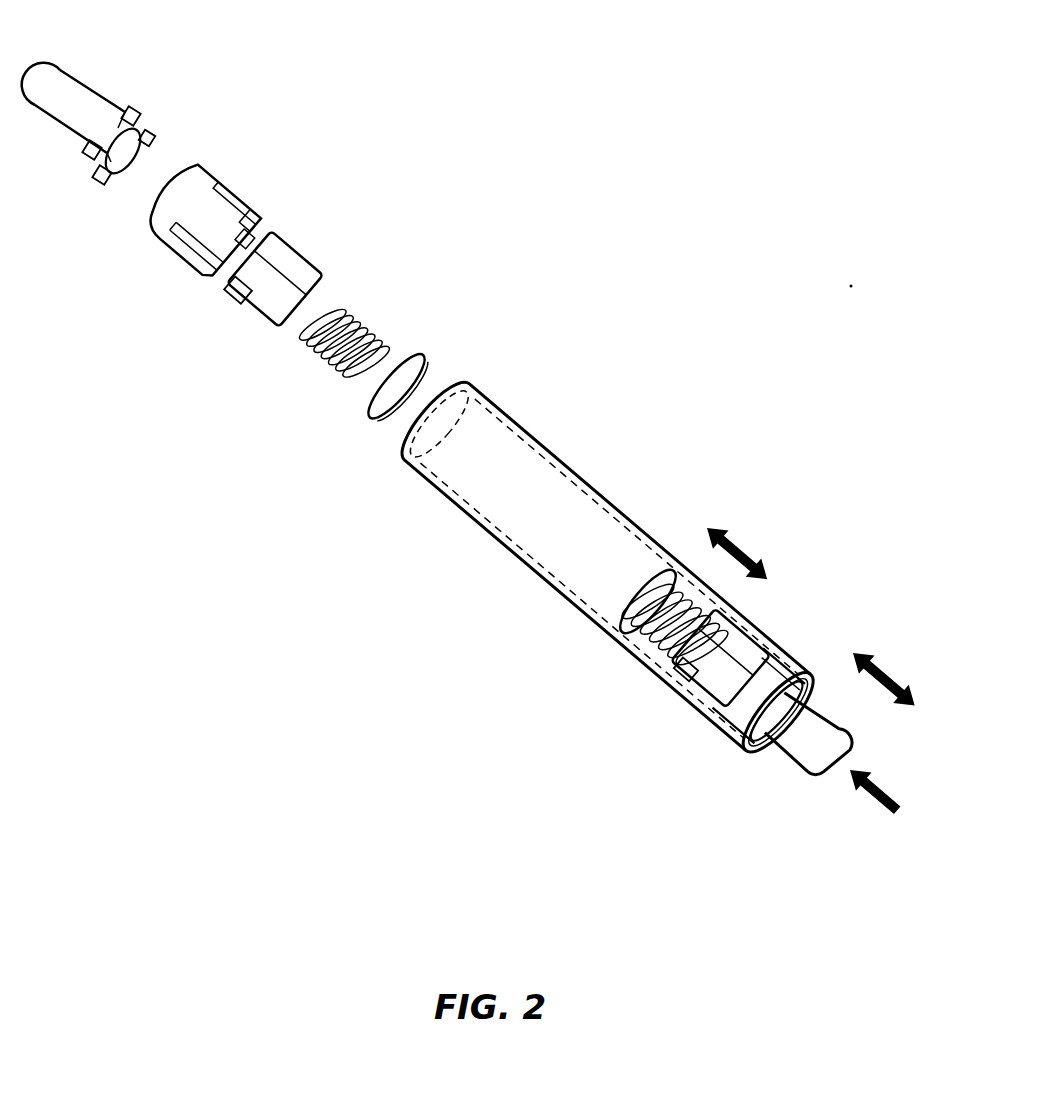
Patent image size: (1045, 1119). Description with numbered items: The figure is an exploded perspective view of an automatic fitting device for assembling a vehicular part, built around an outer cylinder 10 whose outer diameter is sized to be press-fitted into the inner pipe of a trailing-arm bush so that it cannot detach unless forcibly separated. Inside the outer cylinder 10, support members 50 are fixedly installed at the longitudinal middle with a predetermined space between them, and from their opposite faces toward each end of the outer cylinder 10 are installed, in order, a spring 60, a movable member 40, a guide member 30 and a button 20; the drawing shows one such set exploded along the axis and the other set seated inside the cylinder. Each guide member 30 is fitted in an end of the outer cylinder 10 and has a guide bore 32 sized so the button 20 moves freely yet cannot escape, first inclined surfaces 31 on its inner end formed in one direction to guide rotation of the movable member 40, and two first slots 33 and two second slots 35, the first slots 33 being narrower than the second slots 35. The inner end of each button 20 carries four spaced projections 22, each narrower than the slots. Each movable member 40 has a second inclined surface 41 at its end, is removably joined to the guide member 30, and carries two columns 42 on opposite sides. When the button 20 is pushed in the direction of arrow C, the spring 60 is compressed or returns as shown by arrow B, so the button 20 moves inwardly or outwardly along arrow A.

The outer cylinder 10 is at (563, 467).
The button 20 is at (80, 97).
The projection 22 is at (132, 107).
The guide member 30 is at (207, 173).
The first inclined surface 31 is at (258, 205).
The guide bore 32 is at (235, 243).
The first slot 33 is at (188, 233).
The second slot 35 is at (240, 200).
The movable member 40 is at (267, 313).
The second inclined surface 41 is at (242, 273).
The column 42 is at (260, 327).
The support member 50 is at (418, 373).
The spring 60 is at (353, 320).
The arrow A is at (890, 670).
The arrow B is at (743, 540).
The arrow C is at (875, 800).